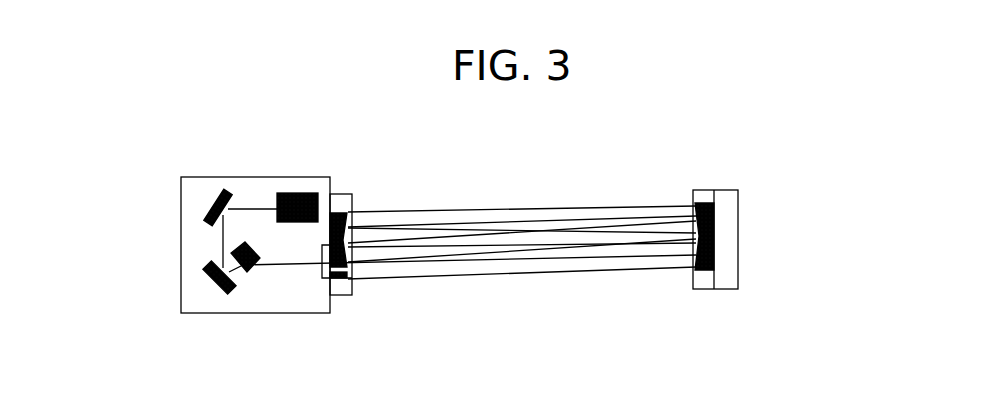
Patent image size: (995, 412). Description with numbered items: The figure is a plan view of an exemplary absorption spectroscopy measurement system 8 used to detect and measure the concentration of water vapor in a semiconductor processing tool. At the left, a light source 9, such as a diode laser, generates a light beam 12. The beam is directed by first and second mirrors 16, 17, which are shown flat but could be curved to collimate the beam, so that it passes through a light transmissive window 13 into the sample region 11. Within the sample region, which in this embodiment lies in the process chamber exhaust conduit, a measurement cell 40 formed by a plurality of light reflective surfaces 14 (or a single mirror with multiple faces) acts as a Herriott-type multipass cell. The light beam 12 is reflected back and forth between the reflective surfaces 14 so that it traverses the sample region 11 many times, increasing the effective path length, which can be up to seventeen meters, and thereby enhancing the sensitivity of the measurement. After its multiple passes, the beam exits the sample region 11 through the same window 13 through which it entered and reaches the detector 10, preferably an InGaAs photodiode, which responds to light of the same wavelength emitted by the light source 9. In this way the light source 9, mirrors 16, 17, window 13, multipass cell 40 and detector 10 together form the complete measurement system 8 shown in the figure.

The absorption spectroscopy measurement system 8 is at (677, 155).
The light source 9 is at (312, 188).
The detector 10 is at (245, 273).
The sample region 11 is at (522, 193).
The light beam 12 is at (273, 188).
The light transmissive window 13 is at (318, 283).
The light reflective surfaces 14 is at (350, 228).
The first mirror 16 is at (235, 188).
The second mirror 17 is at (217, 283).
The measurement cell 40 is at (752, 178).